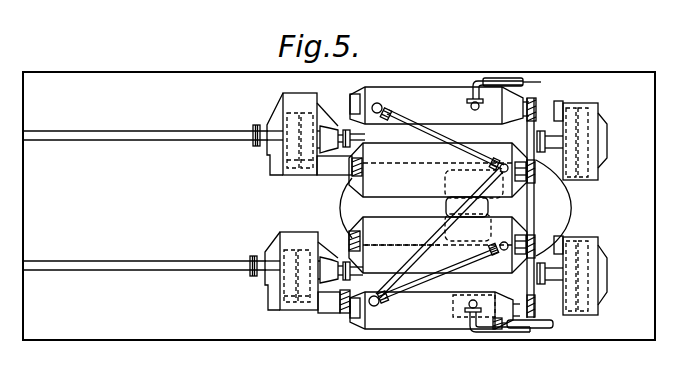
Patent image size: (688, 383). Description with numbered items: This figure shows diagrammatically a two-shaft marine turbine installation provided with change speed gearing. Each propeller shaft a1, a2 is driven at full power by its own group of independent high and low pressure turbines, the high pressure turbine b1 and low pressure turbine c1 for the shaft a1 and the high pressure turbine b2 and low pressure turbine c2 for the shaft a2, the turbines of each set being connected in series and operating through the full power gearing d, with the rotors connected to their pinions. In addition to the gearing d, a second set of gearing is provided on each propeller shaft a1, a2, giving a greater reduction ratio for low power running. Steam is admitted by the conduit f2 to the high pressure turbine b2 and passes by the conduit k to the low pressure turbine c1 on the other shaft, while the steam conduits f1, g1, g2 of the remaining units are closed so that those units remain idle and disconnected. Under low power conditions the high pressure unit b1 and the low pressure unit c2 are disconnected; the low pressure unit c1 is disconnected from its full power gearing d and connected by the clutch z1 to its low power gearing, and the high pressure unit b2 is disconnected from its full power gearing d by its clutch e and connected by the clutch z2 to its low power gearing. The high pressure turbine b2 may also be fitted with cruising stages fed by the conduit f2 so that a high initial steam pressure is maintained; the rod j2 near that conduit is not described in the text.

The propeller shaft a1 is at (105, 136).
The propeller shaft a2 is at (105, 270).
The clutch z1 is at (326, 178).
The clutch z2 is at (330, 312).
The high pressure turbine b1 is at (439, 105).
The high pressure turbine b2 is at (435, 310).
The low pressure turbine c1 is at (438, 170).
The low pressure turbine c2 is at (438, 243).
The steam conduit g1 is at (438, 128).
The steam conduit g2 is at (433, 282).
The conduit k is at (402, 235).
The gearing d is at (572, 182).
The clutch e is at (545, 208).
The steam conduit f1 is at (548, 102).
The steam conduit f2 is at (530, 340).
The valve rod j2 is at (553, 324).